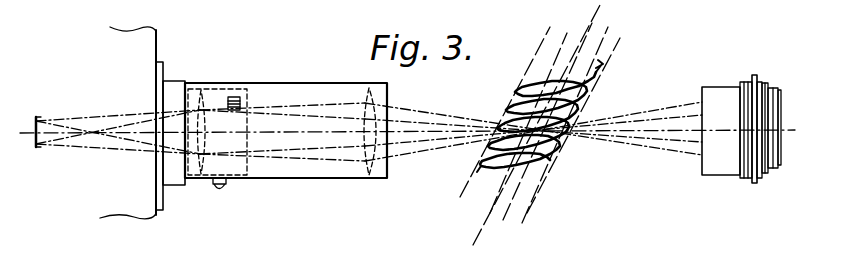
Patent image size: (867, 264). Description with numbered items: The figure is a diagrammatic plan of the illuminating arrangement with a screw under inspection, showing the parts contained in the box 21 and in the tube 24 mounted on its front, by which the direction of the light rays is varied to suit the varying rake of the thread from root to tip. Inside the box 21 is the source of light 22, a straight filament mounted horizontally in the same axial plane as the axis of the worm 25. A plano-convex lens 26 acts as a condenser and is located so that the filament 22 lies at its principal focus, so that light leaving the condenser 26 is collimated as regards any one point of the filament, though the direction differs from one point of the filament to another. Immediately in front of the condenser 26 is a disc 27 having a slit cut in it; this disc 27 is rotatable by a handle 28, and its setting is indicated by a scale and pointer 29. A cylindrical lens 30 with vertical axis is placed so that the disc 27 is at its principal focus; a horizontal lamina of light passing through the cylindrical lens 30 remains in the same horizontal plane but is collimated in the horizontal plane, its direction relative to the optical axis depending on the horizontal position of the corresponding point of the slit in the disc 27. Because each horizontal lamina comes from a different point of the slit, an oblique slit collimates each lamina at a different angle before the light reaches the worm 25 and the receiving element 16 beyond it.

The photoelectric cell 16 is at (720, 95).
The box 21 is at (140, 66).
The source of light 22 is at (38, 120).
The tube 24 is at (310, 173).
The worm 25 is at (600, 66).
The plano-convex lens 26 is at (197, 103).
The disc 27 is at (206, 98).
The handle 28 is at (226, 186).
The scale and pointer 29 is at (242, 100).
The cylindrical lens 30 is at (374, 107).